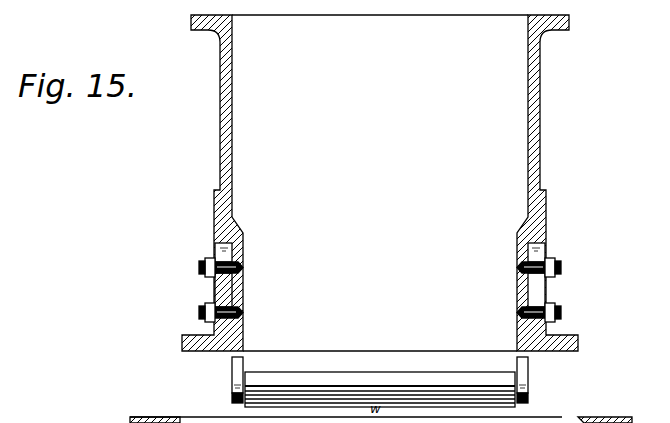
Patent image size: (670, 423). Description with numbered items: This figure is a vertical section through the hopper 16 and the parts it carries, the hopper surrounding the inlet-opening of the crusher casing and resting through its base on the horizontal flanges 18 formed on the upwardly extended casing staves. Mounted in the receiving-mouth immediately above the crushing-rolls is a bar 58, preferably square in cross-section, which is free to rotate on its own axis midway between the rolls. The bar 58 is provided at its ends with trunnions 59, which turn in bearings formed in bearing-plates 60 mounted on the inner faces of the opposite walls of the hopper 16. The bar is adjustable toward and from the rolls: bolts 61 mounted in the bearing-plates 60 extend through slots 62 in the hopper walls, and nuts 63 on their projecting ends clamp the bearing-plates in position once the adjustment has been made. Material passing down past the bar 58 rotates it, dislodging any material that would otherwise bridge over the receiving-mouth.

The horizontal flanges 18 is at (498, 78).
The slots 62 is at (218, 250).
The nuts 63 is at (207, 281).
The bolts 61 is at (200, 313).
The trunnions 59 is at (237, 383).
The bearing-plates 60 is at (232, 400).
The bar 58 is at (382, 378).
The hopper 16 is at (560, 421).